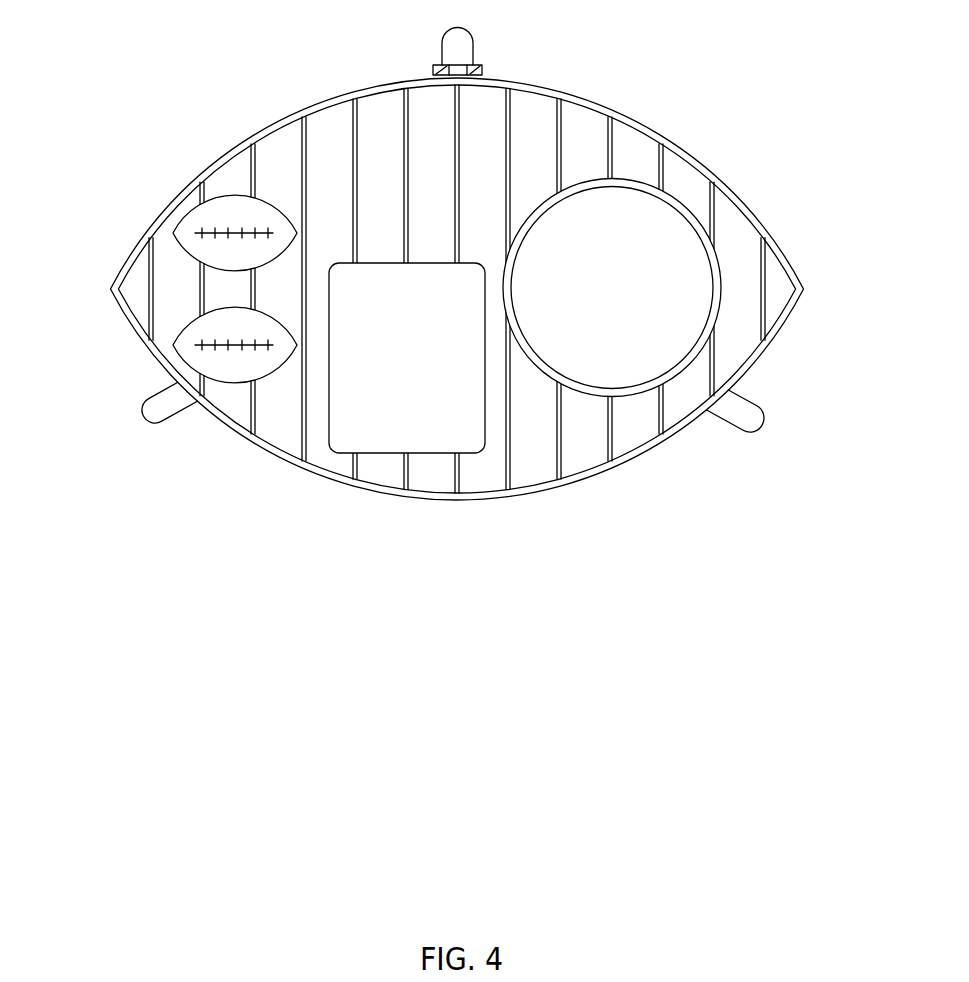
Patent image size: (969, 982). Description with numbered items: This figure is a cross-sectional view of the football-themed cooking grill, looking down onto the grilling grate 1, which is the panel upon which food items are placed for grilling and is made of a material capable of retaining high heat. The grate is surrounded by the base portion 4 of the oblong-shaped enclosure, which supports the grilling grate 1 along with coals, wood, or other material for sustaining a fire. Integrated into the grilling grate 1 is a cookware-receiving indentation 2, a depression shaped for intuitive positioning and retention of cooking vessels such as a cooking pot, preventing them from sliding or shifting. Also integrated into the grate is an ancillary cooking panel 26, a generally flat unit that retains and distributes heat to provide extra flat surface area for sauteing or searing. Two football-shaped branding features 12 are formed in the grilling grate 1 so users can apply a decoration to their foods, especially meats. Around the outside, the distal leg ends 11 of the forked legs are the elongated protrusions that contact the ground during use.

The grilling grate 1 is at (740, 225).
The cookware-receiving indentation 2 is at (635, 207).
The base portion 4 is at (753, 367).
The distal leg end 11 is at (429, 15).
The branding feature 12 is at (200, 213).
The ancillary cooking panel 26 is at (373, 443).